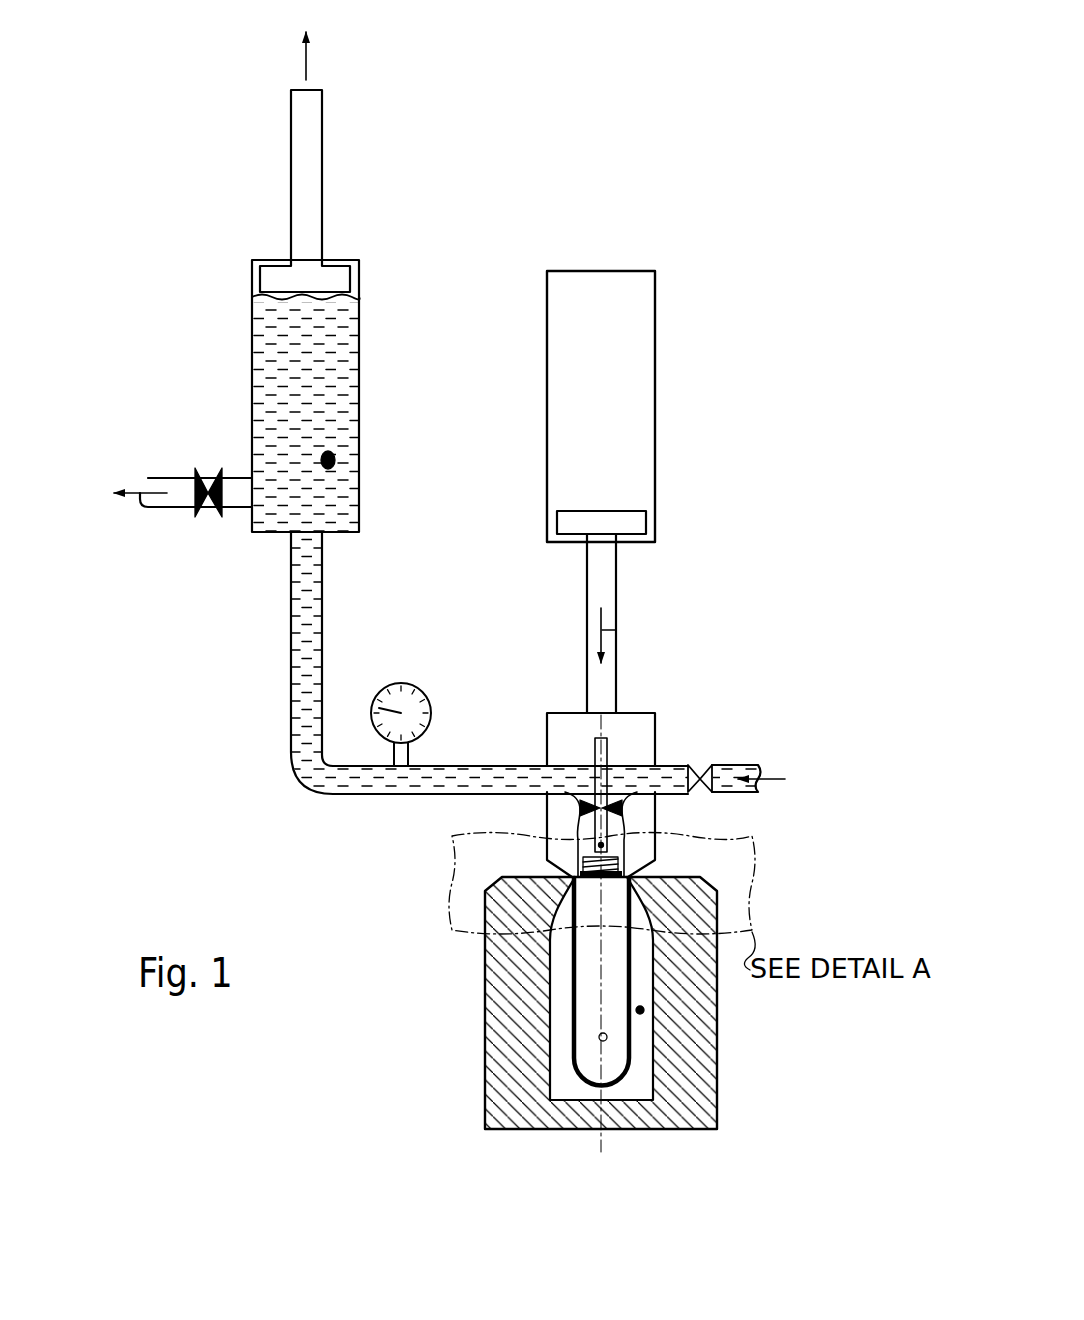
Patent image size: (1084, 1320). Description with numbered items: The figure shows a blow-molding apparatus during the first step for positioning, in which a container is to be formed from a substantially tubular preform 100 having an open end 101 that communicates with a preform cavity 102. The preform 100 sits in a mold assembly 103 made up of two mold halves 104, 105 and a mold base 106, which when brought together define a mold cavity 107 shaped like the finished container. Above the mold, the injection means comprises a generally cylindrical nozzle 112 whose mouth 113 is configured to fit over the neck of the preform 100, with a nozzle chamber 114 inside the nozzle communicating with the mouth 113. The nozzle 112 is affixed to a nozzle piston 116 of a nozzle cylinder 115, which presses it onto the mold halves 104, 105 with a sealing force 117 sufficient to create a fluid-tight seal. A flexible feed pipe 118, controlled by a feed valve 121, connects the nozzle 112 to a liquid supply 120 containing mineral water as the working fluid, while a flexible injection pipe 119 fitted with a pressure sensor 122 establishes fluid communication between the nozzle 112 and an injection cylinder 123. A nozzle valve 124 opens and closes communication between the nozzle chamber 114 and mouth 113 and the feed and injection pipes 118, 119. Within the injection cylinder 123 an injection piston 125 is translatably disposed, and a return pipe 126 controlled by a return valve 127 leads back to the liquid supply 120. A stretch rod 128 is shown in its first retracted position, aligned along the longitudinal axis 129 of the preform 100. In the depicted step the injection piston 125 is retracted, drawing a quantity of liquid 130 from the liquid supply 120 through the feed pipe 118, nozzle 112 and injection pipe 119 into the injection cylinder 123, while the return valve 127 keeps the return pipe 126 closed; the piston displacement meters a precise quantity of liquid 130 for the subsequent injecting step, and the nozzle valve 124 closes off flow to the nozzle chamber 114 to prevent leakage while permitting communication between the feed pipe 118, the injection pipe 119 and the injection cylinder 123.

The preform 100 is at (574, 1090).
The open end 101 is at (620, 835).
The preform cavity 102 is at (607, 1037).
The mold assembly 103 is at (393, 862).
The mold half 104 is at (485, 1089).
The mold half 105 is at (717, 1100).
The mold base 106 is at (590, 1138).
The mold cavity 107 is at (640, 1010).
The nozzle 112 is at (665, 701).
The mouth 113 is at (620, 851).
The nozzle chamber 114 is at (587, 823).
The nozzle cylinder 115 is at (659, 330).
The nozzle piston 116 is at (608, 508).
The sealing force 117 is at (618, 630).
The feed pipe 118 is at (746, 752).
The injection pipe 119 is at (276, 770).
The liquid supply 120 is at (137, 480).
The feed valve 121 is at (701, 748).
The pressure sensor 122 is at (419, 683).
The injection cylinder 123 is at (363, 348).
The nozzle valve 124 is at (576, 807).
The injection piston 125 is at (333, 277).
The return pipe 126 is at (238, 477).
The return valve 127 is at (207, 522).
The stretch rod 128 is at (588, 752).
The longitudinal axis 129 is at (610, 1143).
The liquid 130 is at (336, 460).